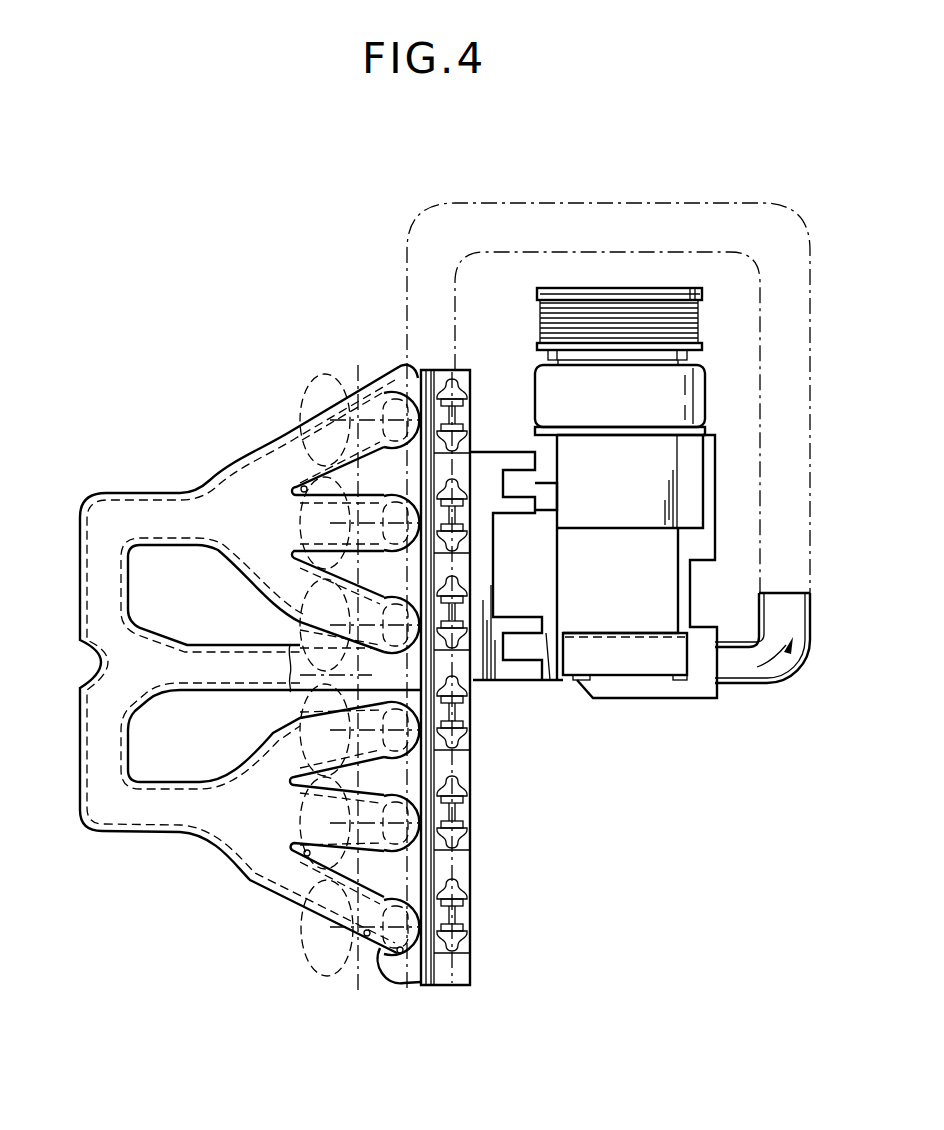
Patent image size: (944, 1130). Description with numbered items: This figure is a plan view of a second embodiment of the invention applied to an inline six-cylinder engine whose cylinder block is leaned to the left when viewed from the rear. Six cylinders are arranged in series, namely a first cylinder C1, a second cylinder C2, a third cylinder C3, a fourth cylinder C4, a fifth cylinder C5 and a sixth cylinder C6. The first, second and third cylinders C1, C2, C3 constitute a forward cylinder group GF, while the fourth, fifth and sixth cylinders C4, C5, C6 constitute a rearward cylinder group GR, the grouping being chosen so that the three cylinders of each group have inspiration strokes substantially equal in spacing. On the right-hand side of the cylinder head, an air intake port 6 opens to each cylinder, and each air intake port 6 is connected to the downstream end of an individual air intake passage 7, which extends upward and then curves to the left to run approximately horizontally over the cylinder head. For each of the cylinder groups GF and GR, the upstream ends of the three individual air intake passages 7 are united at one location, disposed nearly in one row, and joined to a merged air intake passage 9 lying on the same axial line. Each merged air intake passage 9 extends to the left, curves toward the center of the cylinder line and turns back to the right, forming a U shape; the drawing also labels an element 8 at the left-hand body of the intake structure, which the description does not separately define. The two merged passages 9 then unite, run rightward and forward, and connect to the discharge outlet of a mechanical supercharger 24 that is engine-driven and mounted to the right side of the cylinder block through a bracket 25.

The air intake port 6 is at (389, 368).
The individual air intake passage 7 is at (342, 382).
The surge tank 8 is at (200, 508).
The merged air intake passage 9 is at (740, 686).
The mechanical supercharger 24 is at (636, 702).
The bracket 25 is at (517, 683).
The first cylinder C1 is at (318, 373).
The second cylinder C2 is at (314, 401).
The third cylinder C3 is at (306, 534).
The fourth cylinder C4 is at (291, 888).
The fifth cylinder C5 is at (295, 897).
The sixth cylinder C6 is at (236, 887).
The forward cylinder group GF is at (279, 502).
The rearward cylinder group GR is at (264, 835).